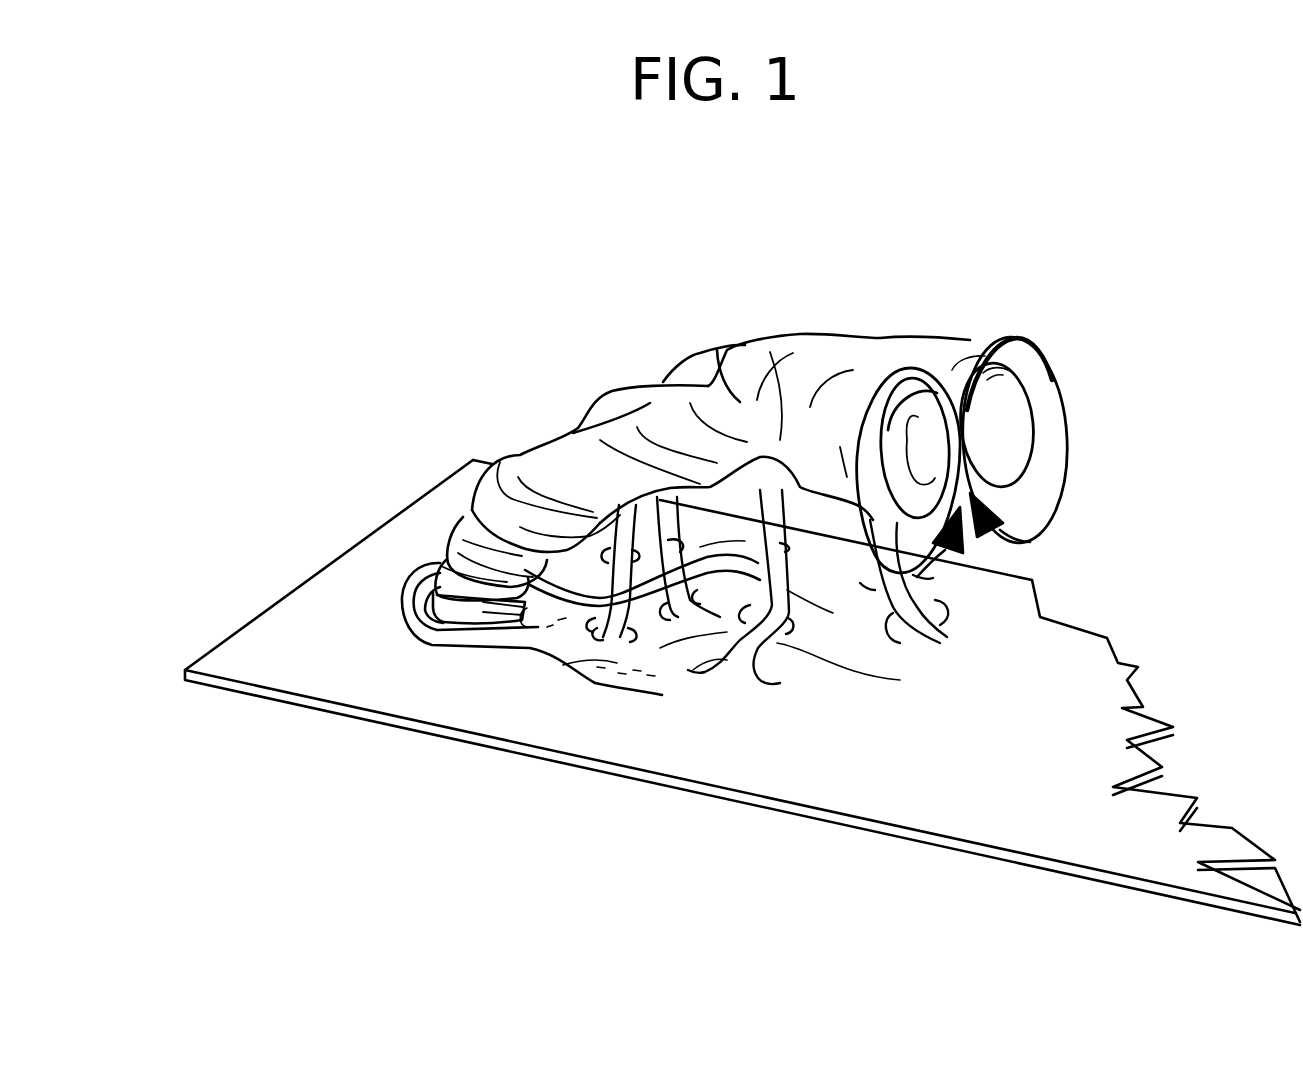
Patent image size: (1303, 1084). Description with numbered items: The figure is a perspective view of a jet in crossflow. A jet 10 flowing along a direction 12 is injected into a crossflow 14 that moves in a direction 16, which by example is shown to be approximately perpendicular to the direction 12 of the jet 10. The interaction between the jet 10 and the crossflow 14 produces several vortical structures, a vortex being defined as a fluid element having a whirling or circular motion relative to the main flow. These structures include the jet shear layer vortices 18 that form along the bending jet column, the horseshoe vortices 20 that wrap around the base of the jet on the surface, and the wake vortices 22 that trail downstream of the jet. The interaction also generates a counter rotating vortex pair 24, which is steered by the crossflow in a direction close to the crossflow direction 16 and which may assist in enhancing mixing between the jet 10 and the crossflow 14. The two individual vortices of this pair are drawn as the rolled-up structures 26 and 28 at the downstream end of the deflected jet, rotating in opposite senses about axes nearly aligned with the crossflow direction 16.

The jet 10 is at (480, 636).
The direction 12 is at (480, 768).
The crossflow 14 is at (290, 518).
The direction 16 is at (215, 518).
The jet shear layer vortices 18 is at (468, 510).
The horseshoe vortices 20 is at (407, 627).
The wake vortices 22 is at (734, 622).
The counter rotating vortex pair 24 is at (1045, 576).
The vortex of counter-rotating pair 26 is at (1057, 385).
The vortex of counter-rotating pair 28 is at (917, 370).